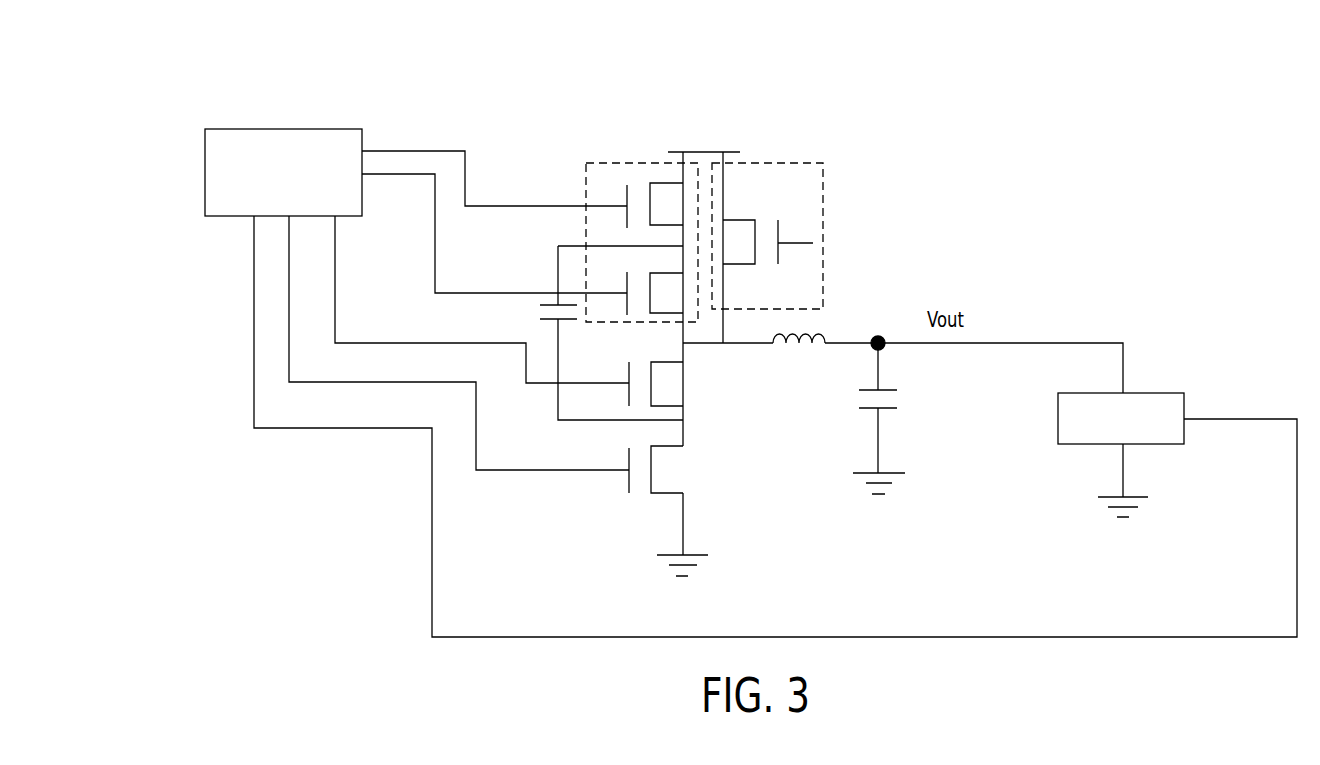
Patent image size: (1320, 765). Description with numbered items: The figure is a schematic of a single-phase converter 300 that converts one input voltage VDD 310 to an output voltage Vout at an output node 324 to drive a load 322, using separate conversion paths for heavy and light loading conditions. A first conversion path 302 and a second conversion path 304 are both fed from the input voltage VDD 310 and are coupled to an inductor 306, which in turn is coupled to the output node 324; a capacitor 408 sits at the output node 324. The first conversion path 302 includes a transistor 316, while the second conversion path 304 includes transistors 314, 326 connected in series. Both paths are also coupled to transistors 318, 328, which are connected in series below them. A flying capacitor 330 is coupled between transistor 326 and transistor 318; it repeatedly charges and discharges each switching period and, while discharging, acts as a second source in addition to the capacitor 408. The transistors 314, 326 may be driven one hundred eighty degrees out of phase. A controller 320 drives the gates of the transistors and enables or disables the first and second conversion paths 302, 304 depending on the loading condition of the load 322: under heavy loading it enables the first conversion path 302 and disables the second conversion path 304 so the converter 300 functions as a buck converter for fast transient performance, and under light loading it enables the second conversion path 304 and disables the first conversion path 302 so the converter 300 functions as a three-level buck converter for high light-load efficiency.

The single-phase converter 300 is at (780, 81).
The first conversion path 302 is at (825, 197).
The second conversion path 304 is at (578, 172).
The inductor 306 is at (799, 363).
The input voltage VDD 310 is at (704, 138).
The transistor 314 is at (655, 293).
The transistor 316 is at (768, 228).
The transistor 318 is at (668, 511).
The controller 320 is at (276, 129).
The load 322 is at (1157, 392).
The output node 324 is at (878, 327).
The transistor 326 is at (655, 205).
The transistor 328 is at (665, 384).
The flying capacitor 330 is at (540, 314).
The capacitor 408 is at (893, 418).